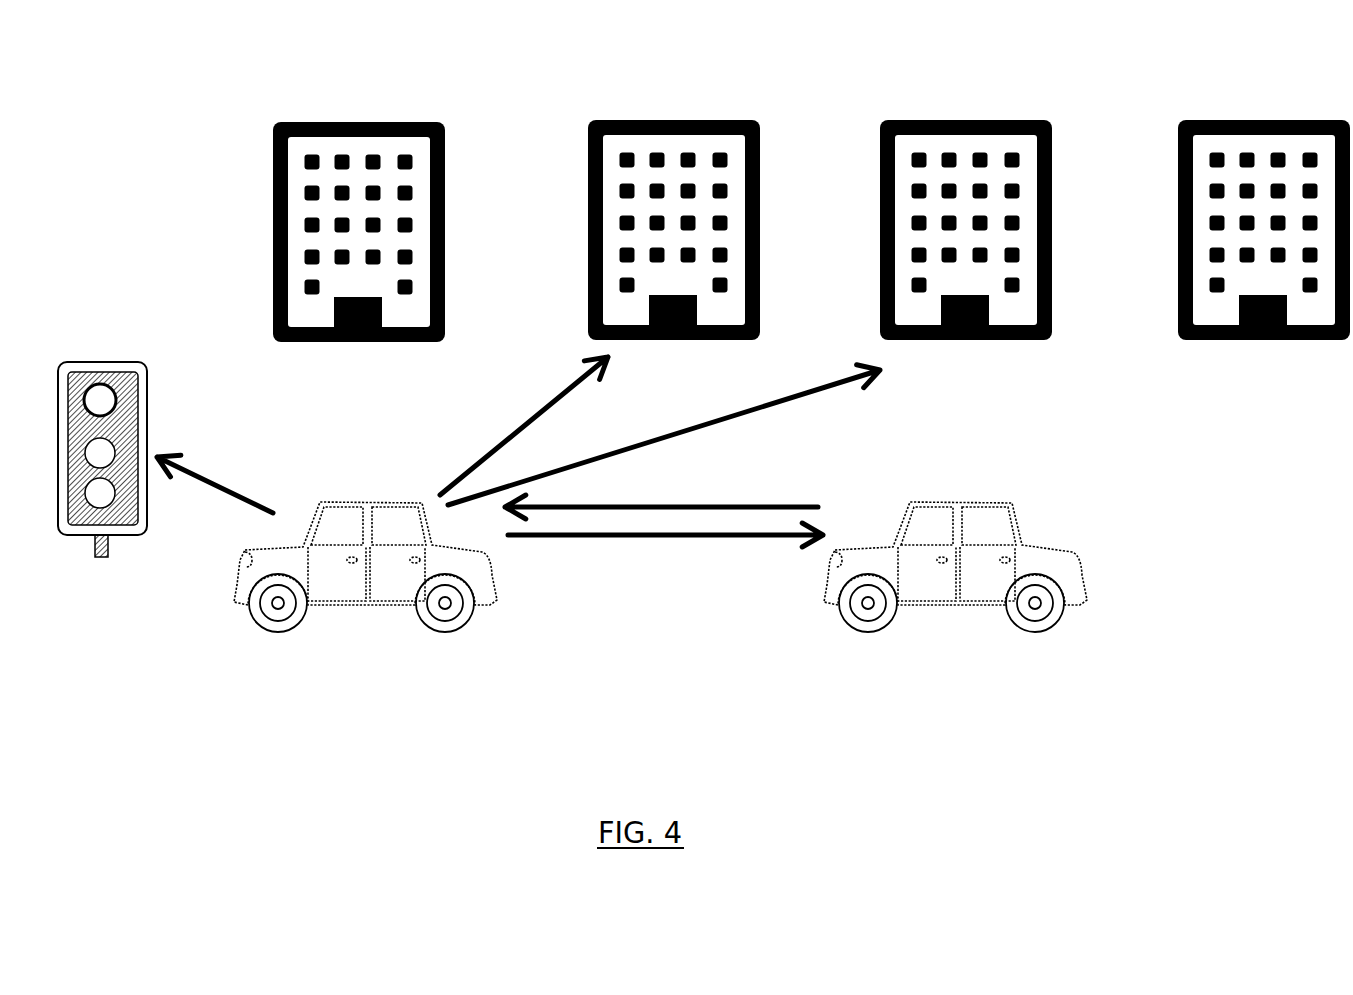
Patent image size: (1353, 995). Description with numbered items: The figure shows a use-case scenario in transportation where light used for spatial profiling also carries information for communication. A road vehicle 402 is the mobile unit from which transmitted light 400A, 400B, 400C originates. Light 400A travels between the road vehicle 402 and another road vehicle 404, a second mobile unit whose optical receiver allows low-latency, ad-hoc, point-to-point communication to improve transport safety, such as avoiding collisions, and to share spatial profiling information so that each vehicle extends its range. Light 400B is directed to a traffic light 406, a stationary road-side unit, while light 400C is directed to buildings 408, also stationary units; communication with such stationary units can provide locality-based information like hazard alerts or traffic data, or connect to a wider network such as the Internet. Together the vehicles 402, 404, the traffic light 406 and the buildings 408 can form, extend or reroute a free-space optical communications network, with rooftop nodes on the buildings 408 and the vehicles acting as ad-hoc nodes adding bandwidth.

The transmitted light 400A is at (657, 540).
The transmitted light 400B is at (210, 478).
The transmitted light 400C is at (492, 447).
The road vehicle 402 is at (340, 503).
The road vehicle 404 is at (924, 503).
The traffic light 406 is at (97, 362).
The building 408 is at (634, 120).